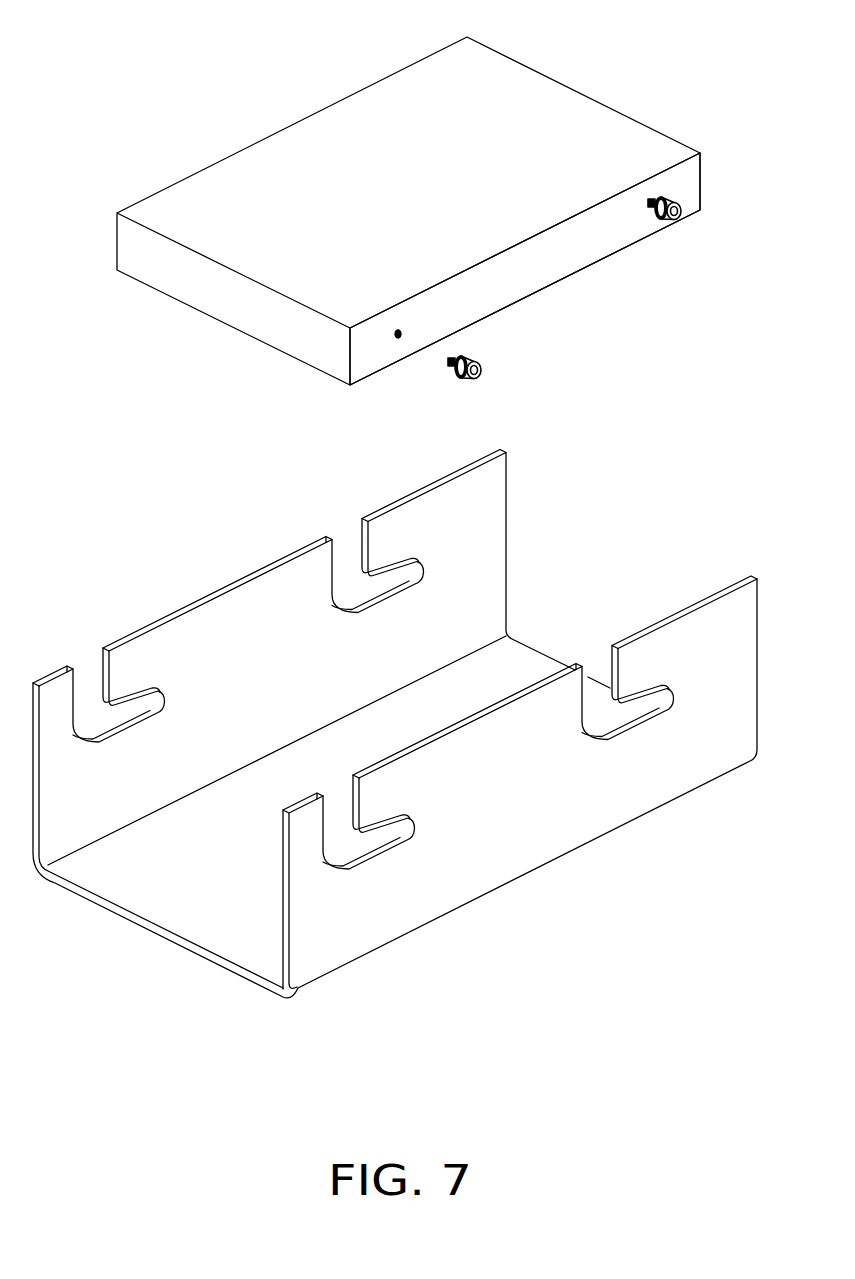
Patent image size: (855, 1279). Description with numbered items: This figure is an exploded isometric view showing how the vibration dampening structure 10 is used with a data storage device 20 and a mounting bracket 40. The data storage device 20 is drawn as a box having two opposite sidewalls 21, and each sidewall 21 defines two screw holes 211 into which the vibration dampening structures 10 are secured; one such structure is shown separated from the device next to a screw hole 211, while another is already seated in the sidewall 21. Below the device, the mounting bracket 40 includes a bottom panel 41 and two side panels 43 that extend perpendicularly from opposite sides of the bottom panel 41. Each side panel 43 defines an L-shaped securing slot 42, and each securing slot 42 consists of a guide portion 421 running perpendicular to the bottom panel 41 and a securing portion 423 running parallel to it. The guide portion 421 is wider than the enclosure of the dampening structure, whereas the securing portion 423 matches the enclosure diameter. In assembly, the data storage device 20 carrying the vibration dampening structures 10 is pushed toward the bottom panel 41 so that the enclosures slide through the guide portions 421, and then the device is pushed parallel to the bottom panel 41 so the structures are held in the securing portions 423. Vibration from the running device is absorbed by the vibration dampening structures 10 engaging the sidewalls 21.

The vibration dampening structure 10 is at (480, 355).
The data storage device 20 is at (600, 86).
The sidewall 21 is at (577, 257).
The screw hole 211 is at (400, 337).
The mounting bracket 40 is at (395, 753).
The bottom panel 41 is at (160, 902).
The securing slot 42 is at (417, 915).
The guide portion 421 is at (342, 832).
The securing portion 423 is at (395, 832).
The side panel 43 is at (520, 816).